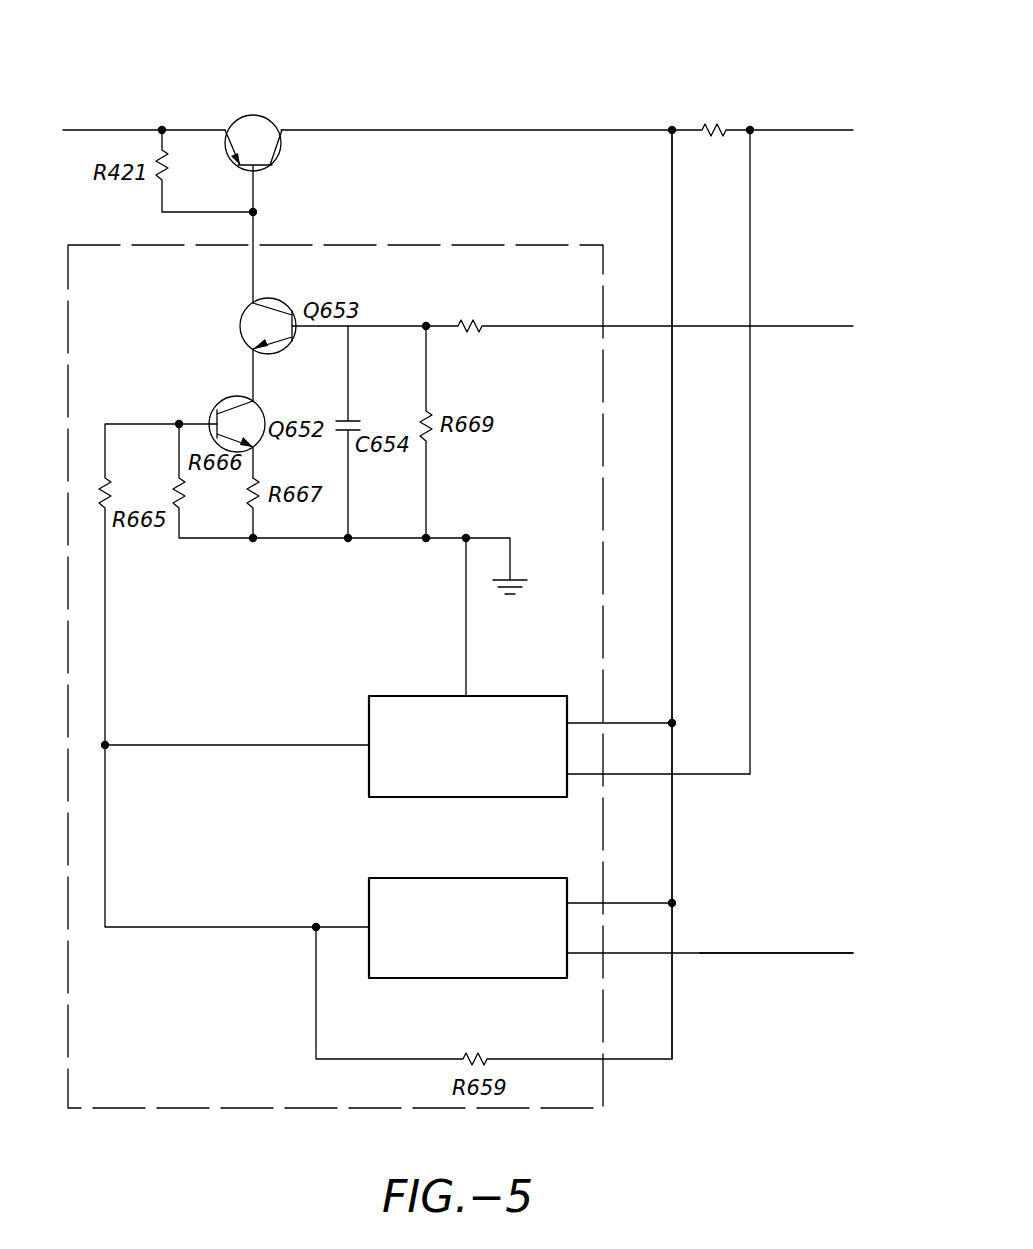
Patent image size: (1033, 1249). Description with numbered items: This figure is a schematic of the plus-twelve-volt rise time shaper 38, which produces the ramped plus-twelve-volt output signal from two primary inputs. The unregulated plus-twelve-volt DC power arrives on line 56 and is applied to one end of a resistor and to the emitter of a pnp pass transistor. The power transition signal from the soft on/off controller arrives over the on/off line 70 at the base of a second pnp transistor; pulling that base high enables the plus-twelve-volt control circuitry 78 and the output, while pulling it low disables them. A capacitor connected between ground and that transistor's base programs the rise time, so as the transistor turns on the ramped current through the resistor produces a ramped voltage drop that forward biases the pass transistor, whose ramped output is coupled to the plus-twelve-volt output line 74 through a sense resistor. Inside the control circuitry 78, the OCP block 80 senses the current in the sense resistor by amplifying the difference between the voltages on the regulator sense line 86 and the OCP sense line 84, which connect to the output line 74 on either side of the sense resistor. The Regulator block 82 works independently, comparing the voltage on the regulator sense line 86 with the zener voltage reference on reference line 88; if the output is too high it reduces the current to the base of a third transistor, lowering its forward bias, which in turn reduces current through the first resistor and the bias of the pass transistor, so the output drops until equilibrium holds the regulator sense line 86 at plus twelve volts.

The +12 volt rise time shaper 38 is at (248, 42).
The +12 volt DC power line 56 is at (113, 130).
The on/off line 70 is at (820, 326).
The +12 volt output line 74 is at (818, 130).
The +12 volt control circuitry 78 is at (90, 380).
The OCP block 80 is at (426, 667).
The Regulator block 82 is at (575, 928).
The OCP sense line 84 is at (750, 435).
The regulator sense line 86 is at (674, 393).
The reference line 88 is at (812, 953).